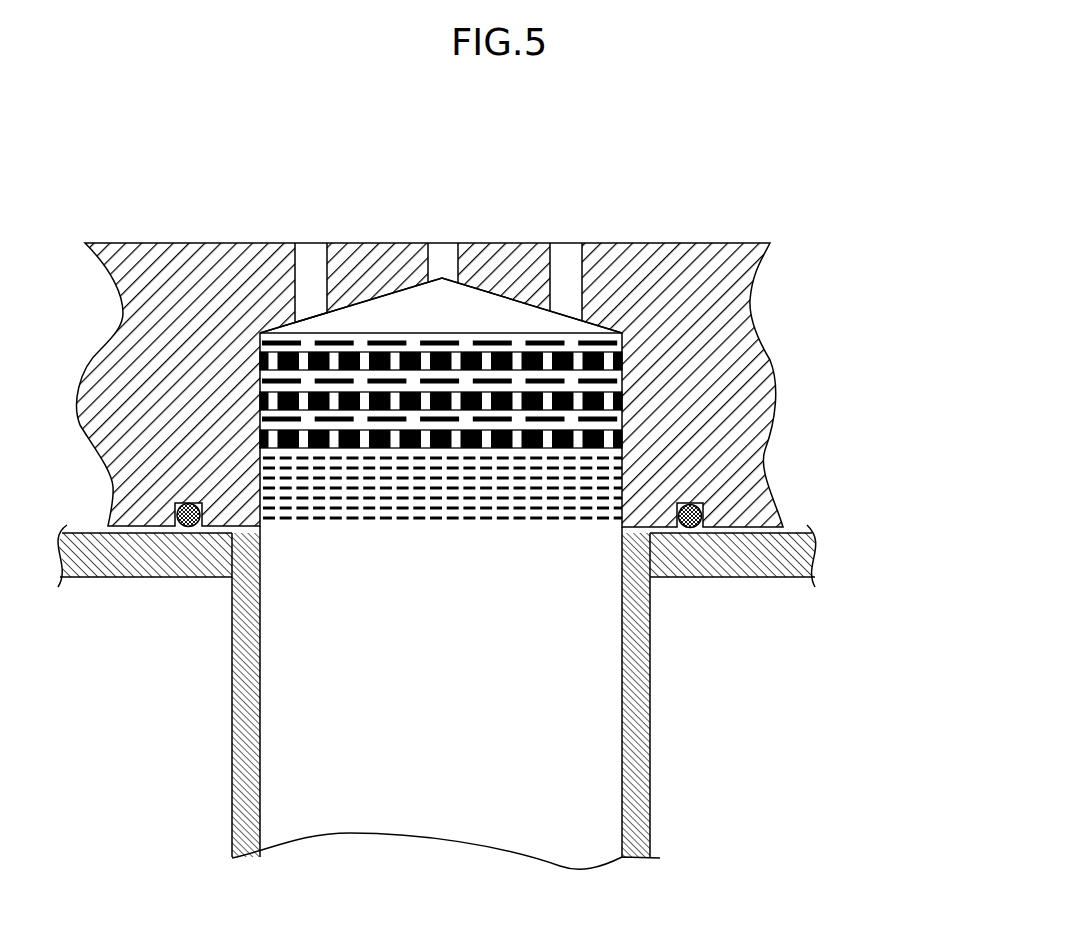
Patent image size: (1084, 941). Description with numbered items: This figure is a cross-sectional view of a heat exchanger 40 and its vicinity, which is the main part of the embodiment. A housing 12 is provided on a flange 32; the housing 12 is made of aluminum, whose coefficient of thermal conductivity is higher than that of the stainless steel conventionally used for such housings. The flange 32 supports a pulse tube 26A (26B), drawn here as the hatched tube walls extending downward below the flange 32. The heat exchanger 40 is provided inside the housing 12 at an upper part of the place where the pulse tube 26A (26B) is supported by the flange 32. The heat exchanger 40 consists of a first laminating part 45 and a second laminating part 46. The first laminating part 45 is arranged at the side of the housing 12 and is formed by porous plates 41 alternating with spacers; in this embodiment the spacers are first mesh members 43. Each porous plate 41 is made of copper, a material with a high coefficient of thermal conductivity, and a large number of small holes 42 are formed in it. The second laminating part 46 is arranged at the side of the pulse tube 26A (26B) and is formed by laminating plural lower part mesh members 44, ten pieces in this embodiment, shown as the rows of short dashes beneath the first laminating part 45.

The housing 12 is at (727, 243).
The pulse tube 26A is at (542, 470).
The pulse tube 26B is at (661, 699).
The flange 32 is at (823, 556).
The heat exchanger 40 is at (467, 314).
The porous plate 41 is at (622, 340).
The small holes 42 is at (449, 363).
The first mesh member 43 is at (622, 318).
The lower part mesh member 44 is at (592, 513).
The first laminating part 45 is at (609, 368).
The second laminating part 46 is at (598, 547).